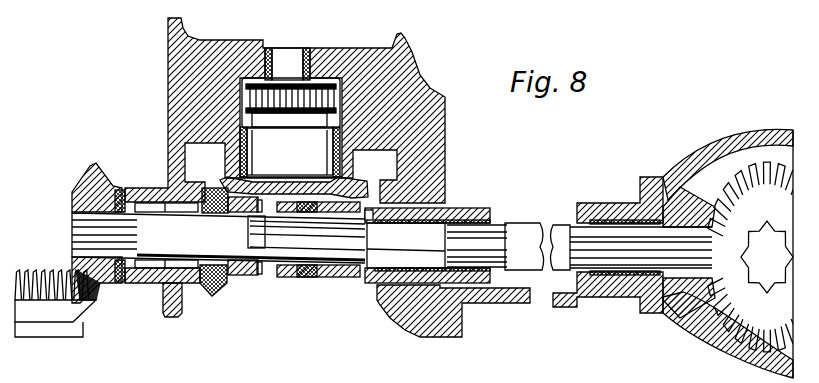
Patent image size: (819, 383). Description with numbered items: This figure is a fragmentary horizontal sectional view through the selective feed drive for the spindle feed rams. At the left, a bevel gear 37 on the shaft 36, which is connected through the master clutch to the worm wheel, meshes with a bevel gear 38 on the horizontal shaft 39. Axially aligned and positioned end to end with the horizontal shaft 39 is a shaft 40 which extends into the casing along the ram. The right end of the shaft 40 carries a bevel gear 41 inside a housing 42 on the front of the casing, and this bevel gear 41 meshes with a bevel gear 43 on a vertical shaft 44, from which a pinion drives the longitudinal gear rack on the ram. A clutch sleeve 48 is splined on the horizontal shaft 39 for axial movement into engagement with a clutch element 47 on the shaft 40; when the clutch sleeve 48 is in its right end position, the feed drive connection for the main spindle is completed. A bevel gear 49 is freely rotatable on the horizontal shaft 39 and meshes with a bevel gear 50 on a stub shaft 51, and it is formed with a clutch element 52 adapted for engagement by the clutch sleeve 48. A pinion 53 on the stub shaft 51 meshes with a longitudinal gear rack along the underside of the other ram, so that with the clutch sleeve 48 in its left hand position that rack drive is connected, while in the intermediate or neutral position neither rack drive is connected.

The shaft 36 is at (43, 337).
The bevel gear 37 is at (58, 284).
The bevel gear 38 is at (95, 180).
The horizontal shaft 39 is at (74, 228).
The shaft 40 is at (525, 228).
The bevel gear 41 is at (690, 191).
The housing 42 is at (742, 137).
The bevel gear 43 is at (762, 160).
The vertical shaft 44 is at (763, 233).
The clutch element 47 is at (405, 187).
The clutch sleeve 48 is at (355, 280).
The bevel gear 49 is at (218, 288).
The bevel gear 50 is at (216, 178).
The stub shaft 51 is at (324, 142).
The clutch element 52 is at (262, 282).
The pinion 53 is at (337, 101).